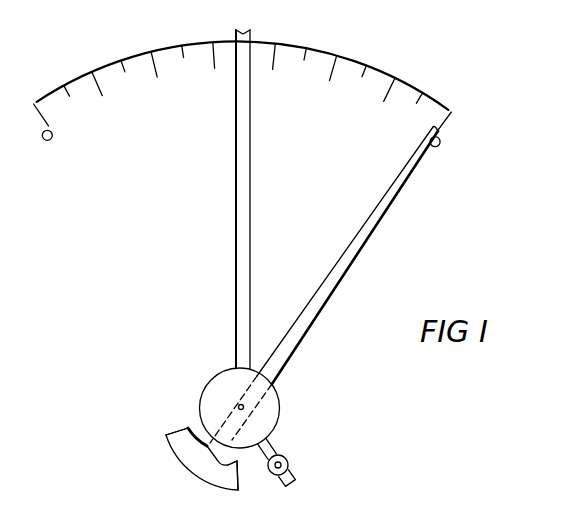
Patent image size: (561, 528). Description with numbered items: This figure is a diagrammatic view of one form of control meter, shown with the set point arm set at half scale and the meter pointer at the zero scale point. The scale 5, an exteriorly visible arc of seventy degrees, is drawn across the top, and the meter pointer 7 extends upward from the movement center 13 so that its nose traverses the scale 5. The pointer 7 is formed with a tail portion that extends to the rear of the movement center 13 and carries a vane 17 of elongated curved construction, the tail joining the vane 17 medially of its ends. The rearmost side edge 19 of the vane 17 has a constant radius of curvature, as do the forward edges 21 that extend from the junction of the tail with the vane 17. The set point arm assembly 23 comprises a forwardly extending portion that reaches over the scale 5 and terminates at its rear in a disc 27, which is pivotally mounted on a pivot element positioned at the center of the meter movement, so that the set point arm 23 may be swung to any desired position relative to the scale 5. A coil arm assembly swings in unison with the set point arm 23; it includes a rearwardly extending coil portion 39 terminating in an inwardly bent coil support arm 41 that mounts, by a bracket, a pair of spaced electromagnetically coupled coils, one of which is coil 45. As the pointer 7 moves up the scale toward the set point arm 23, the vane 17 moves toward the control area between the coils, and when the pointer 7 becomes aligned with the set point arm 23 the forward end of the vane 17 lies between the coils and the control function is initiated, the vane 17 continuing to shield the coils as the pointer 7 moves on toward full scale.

The scale 5 is at (396, 76).
The meter pointer 7 is at (365, 243).
The movement center 13 is at (244, 407).
The vane 17 is at (190, 462).
The rearmost side edge 19 is at (229, 483).
The forward edges 21 is at (186, 428).
The set point arm assembly 23 is at (253, 208).
The disc 27 is at (266, 381).
The coil portion 39 is at (275, 450).
The coil support arm 41 is at (294, 480).
The coil 45 is at (288, 462).